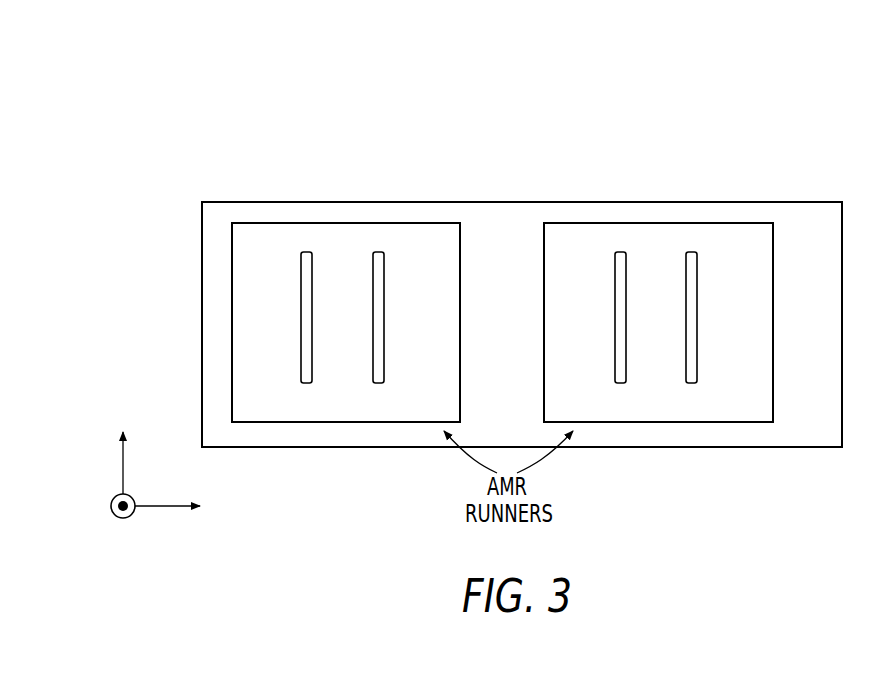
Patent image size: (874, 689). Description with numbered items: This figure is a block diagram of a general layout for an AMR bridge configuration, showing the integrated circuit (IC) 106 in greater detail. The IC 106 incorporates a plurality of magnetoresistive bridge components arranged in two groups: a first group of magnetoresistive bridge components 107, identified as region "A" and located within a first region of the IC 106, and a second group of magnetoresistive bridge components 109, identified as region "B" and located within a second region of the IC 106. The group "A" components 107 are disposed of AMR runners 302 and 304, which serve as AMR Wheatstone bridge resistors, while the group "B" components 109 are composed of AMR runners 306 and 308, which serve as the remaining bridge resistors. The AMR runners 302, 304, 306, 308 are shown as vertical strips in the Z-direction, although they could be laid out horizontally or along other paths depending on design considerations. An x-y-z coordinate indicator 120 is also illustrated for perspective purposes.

The integrated circuit (IC) 106 is at (503, 192).
The first group of magnetoresistive bridge components 107 is at (440, 254).
The second group of magnetoresistive bridge components 109 is at (750, 266).
The AMR runner 302 is at (301, 335).
The AMR runner 304 is at (384, 334).
The AMR runner 306 is at (615, 335).
The AMR runner 308 is at (697, 334).
The x-y-z coordinate indicator 120 is at (143, 537).